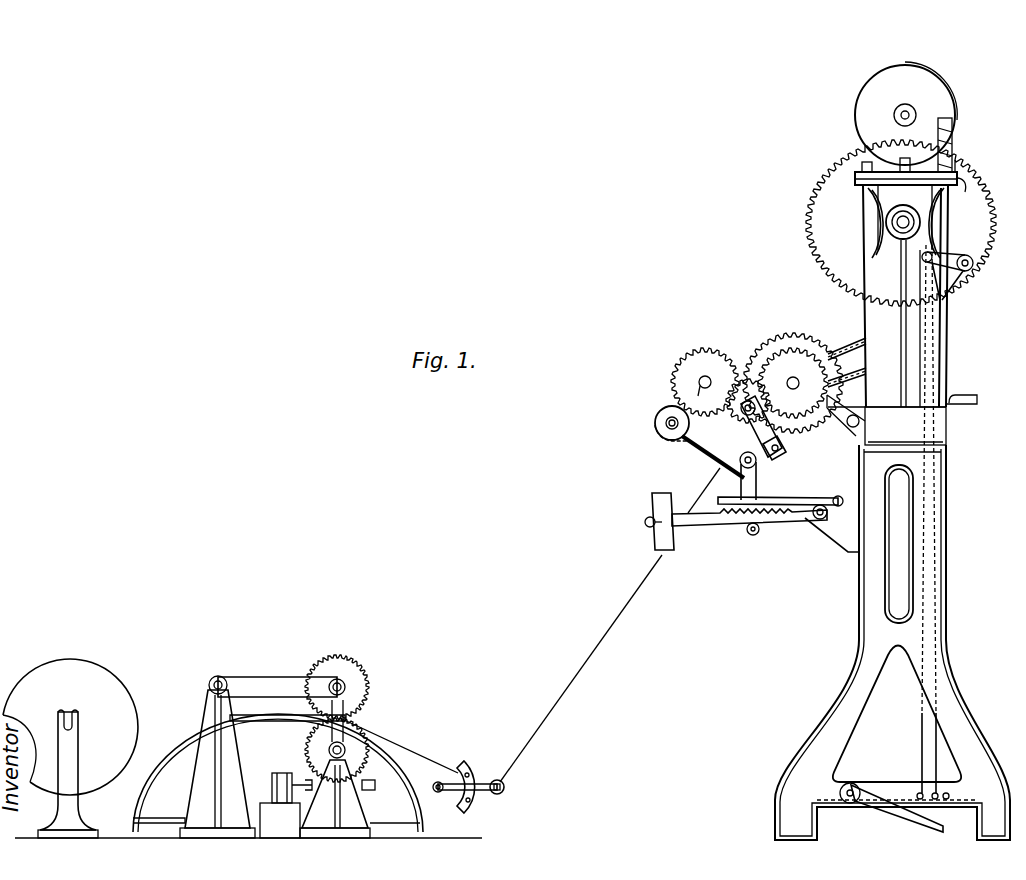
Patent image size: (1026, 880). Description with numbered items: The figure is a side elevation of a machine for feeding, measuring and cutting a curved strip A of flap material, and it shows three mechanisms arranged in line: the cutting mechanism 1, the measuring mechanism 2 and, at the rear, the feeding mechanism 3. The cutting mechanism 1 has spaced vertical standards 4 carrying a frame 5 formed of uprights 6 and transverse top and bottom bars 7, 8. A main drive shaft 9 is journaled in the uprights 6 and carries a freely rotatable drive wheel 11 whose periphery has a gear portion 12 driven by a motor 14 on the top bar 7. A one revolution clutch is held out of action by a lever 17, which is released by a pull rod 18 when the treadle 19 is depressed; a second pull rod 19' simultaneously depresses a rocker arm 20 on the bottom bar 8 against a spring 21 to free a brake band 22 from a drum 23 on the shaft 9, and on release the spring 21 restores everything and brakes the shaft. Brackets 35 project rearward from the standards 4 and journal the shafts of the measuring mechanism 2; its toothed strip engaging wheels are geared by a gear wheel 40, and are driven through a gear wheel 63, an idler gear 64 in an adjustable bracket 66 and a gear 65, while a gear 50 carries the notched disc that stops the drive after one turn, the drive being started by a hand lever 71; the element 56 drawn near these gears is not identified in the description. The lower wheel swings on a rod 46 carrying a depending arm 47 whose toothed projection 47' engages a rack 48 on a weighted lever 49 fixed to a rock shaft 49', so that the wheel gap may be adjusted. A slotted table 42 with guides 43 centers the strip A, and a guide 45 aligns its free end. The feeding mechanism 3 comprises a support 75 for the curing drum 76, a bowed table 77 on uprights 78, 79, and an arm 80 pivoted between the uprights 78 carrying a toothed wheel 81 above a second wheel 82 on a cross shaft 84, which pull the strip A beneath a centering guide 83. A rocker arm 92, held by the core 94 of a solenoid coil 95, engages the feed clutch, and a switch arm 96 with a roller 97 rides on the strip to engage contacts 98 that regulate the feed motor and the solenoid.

The motor 14 is at (932, 96).
The rocker arm 20 is at (955, 137).
The spring 21 is at (930, 163).
The drive wheel 11 is at (957, 163).
The gear portion 12 is at (972, 176).
The top bar 7 is at (856, 181).
The brake band 22 is at (864, 205).
The main drive shaft 9 is at (898, 223).
The drum 23 is at (880, 236).
The lever 17 is at (975, 266).
The frame 5 is at (938, 322).
The uprights 6 is at (923, 343).
The cutting mechanism 1 is at (910, 289).
The guide 45 is at (970, 393).
The bottom bar 8 is at (948, 425).
The slotted table 42 is at (860, 416).
The guides 43 is at (868, 428).
The belts 56 is at (851, 354).
The gear 50 is at (797, 344).
The gear wheel 40 is at (782, 348).
The gear 65 is at (752, 378).
The measuring mechanism 2 is at (698, 353).
The gear wheel 63 is at (686, 362).
The idler gear 64 is at (768, 418).
The adjustable bracket 66 is at (784, 456).
The brackets 35 is at (655, 424).
The rod 46 is at (744, 457).
The depending arm 47 is at (703, 474).
The hand lever 71 is at (812, 497).
The weighted lever 49 is at (677, 527).
The rack 48 is at (740, 530).
The toothed projection 47' is at (775, 542).
The rock shaft 49' is at (832, 545).
The vertical standards 4 is at (948, 583).
The pull rod 18 is at (919, 728).
The second pull rod 19' is at (913, 769).
The treadle 19 is at (891, 814).
The curing drum 76 is at (113, 683).
The support 75 is at (68, 752).
The table 77 is at (173, 737).
The uprights 78 is at (194, 790).
The strip A is at (151, 715).
The feeding mechanism 3 is at (217, 744).
The arm 80 is at (283, 678).
The centering guide 83 is at (252, 715).
The toothed wheel 81 is at (357, 678).
The second wheel 82 is at (352, 741).
The cross shaft 84 is at (326, 753).
The uprights 79 is at (346, 770).
The rocker arm 92 is at (383, 796).
The core 94 is at (272, 786).
The solenoid coil 95 is at (280, 820).
The switch arm 96 is at (452, 773).
The contacts 98 is at (474, 771).
The roller 97 is at (505, 781).